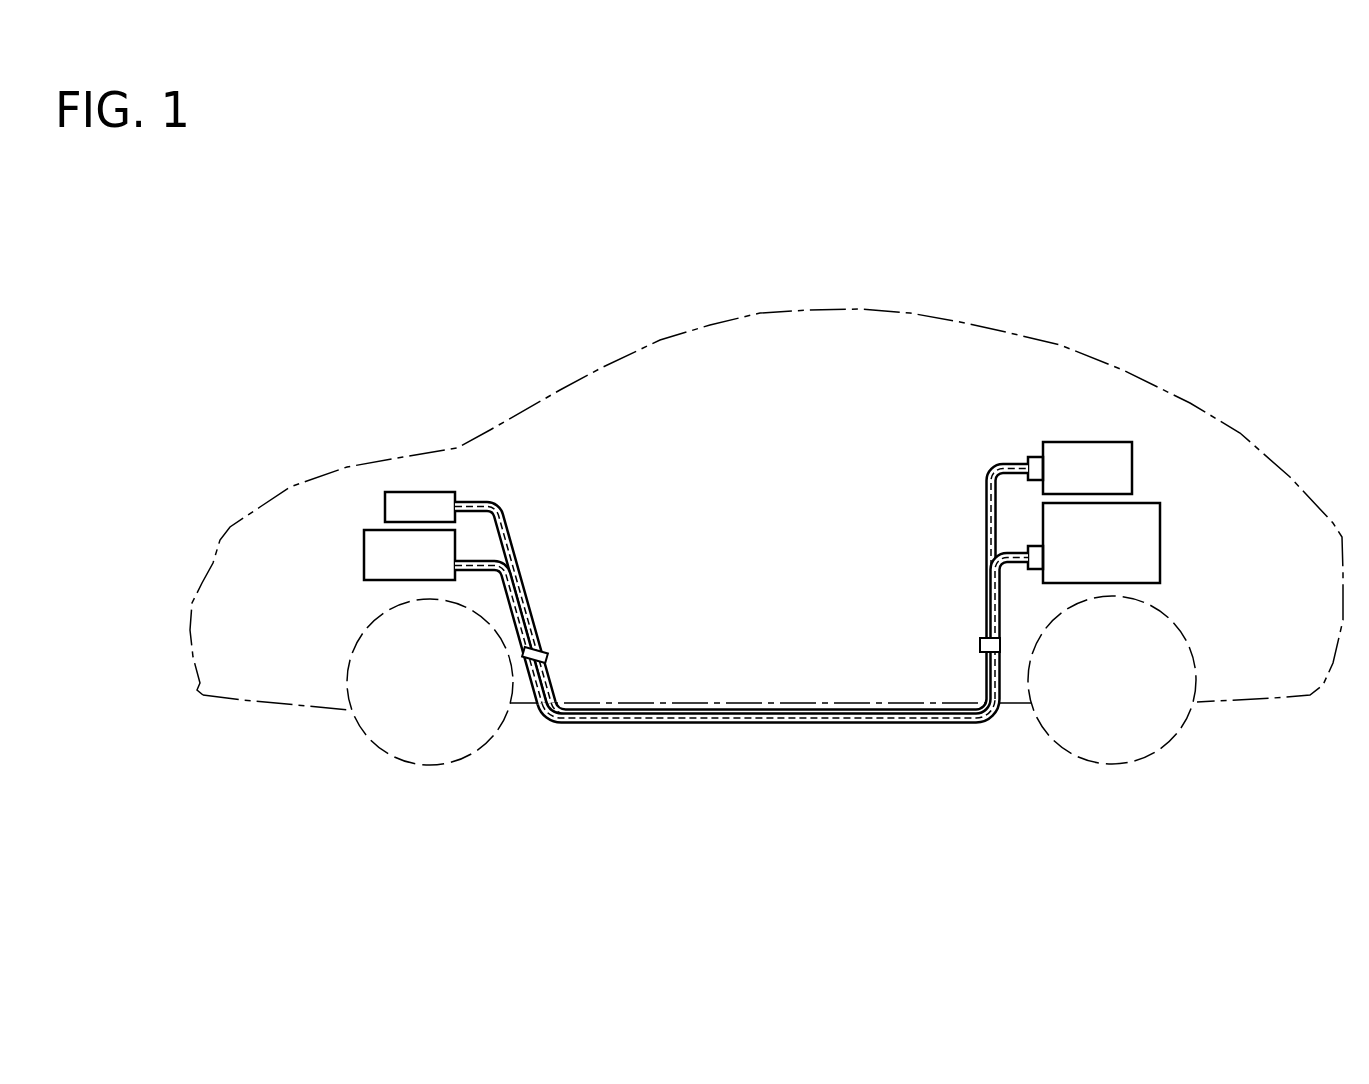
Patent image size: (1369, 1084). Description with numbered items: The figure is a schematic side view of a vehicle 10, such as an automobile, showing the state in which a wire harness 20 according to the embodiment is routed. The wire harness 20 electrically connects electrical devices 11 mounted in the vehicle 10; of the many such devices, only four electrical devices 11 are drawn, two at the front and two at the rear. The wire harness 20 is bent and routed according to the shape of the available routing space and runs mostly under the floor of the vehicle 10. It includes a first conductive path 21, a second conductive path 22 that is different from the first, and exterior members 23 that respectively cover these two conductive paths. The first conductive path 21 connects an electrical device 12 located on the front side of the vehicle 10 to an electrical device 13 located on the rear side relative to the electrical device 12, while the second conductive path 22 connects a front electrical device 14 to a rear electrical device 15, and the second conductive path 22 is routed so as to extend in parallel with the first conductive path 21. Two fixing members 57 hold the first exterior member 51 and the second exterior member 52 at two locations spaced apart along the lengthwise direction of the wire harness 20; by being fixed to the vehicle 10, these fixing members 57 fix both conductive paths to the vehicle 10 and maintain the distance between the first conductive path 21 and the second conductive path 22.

The vehicle 10 is at (1075, 350).
The electrical devices 11 is at (761, 512).
The electrical device 12 is at (382, 507).
The electrical device 13 is at (1132, 468).
The electrical device 14 is at (363, 553).
The electrical device 15 is at (1161, 545).
The wire harness 20 is at (741, 593).
The first conductive path 21 is at (987, 497).
The second conductive path 22 is at (987, 603).
The exterior members 23 is at (725, 647).
The first exterior member 51 is at (512, 523).
The second exterior member 52 is at (765, 726).
The fixing members 57 is at (547, 652).